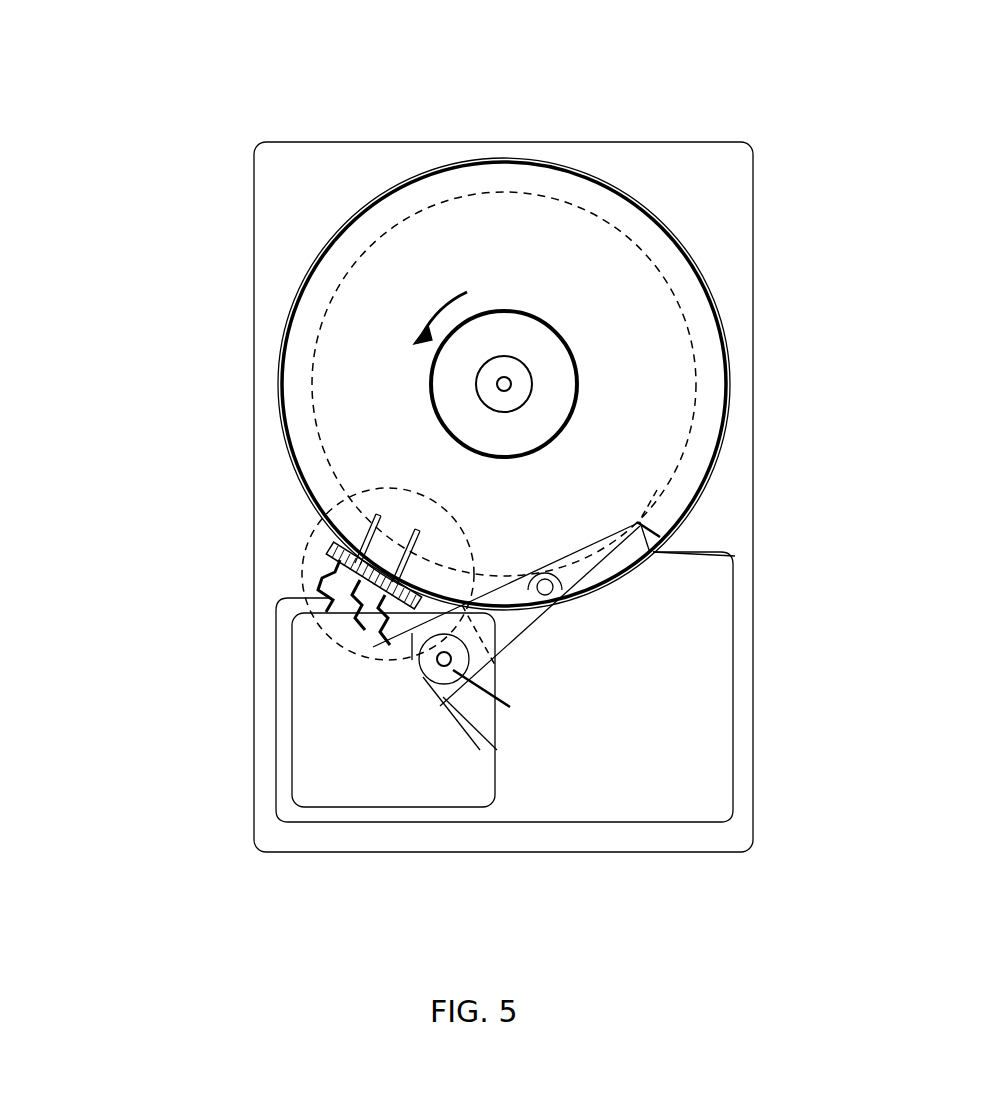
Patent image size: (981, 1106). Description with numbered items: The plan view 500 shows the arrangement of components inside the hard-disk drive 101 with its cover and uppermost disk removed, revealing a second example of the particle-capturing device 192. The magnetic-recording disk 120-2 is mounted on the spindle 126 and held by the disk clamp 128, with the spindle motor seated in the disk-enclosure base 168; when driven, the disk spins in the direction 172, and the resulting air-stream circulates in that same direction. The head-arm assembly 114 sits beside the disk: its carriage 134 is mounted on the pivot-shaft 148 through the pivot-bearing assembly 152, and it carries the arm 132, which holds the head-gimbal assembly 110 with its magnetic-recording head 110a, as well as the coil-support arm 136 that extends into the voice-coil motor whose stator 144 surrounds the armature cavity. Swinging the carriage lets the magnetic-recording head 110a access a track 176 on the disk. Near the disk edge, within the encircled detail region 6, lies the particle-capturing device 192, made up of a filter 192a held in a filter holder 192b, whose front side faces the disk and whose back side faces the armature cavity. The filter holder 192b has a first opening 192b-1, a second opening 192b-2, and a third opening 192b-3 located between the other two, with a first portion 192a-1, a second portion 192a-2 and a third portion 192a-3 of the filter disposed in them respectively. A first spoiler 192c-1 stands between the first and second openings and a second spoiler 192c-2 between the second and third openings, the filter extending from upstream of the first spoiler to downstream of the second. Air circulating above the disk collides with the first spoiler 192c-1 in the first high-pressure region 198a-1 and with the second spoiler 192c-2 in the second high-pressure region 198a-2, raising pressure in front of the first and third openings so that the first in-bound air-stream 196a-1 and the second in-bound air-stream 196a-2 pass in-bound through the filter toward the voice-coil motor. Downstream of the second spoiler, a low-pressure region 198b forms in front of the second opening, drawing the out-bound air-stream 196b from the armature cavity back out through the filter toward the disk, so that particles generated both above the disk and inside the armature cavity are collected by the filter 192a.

The plan view 500 is at (124, 74).
The hard-disk drive 101 is at (712, 130).
The disk-enclosure base 168 is at (697, 187).
The direction 172 is at (437, 313).
The magnetic-recording disk 120-2 is at (580, 325).
The spindle 126 is at (507, 384).
The disk clamp 128 is at (550, 407).
The low-pressure region 198b is at (420, 528).
The out-bound air-stream 196b is at (414, 582).
The track 176 is at (660, 537).
The magnetic-recording head 110a is at (735, 556).
The head-gimbal assembly 110 is at (590, 550).
The arm 132 is at (517, 607).
The carriage 134 is at (483, 667).
The pivot-bearing assembly 152 is at (510, 707).
The coil-support arm 136 is at (497, 750).
The head-arm assembly 114 is at (855, 562).
The stator 144 is at (375, 753).
The pivot-shaft 148 is at (437, 660).
The detail region of FIG. 6 is at (470, 528).
The particle-capturing device 192 is at (105, 872).
The second spoiler 192c-2 is at (385, 530).
The second high-pressure region 198a-2 is at (405, 540).
The first spoiler 192c-1 is at (355, 540).
The first high-pressure region 198a-1 is at (365, 555).
The filter holder 192b is at (350, 558).
The filter 192a is at (337, 572).
The first portion of the filter 192a-1 is at (340, 590).
The first in-bound air-stream 196a-1 is at (350, 603).
The first opening 192b-1 is at (345, 598).
The second in-bound air-stream 196a-2 is at (360, 610).
The third portion of the filter 192a-3 is at (370, 612).
The third opening 192b-3 is at (380, 615).
The second portion of the filter 192a-2 is at (388, 620).
The second opening 192b-2 is at (396, 640).